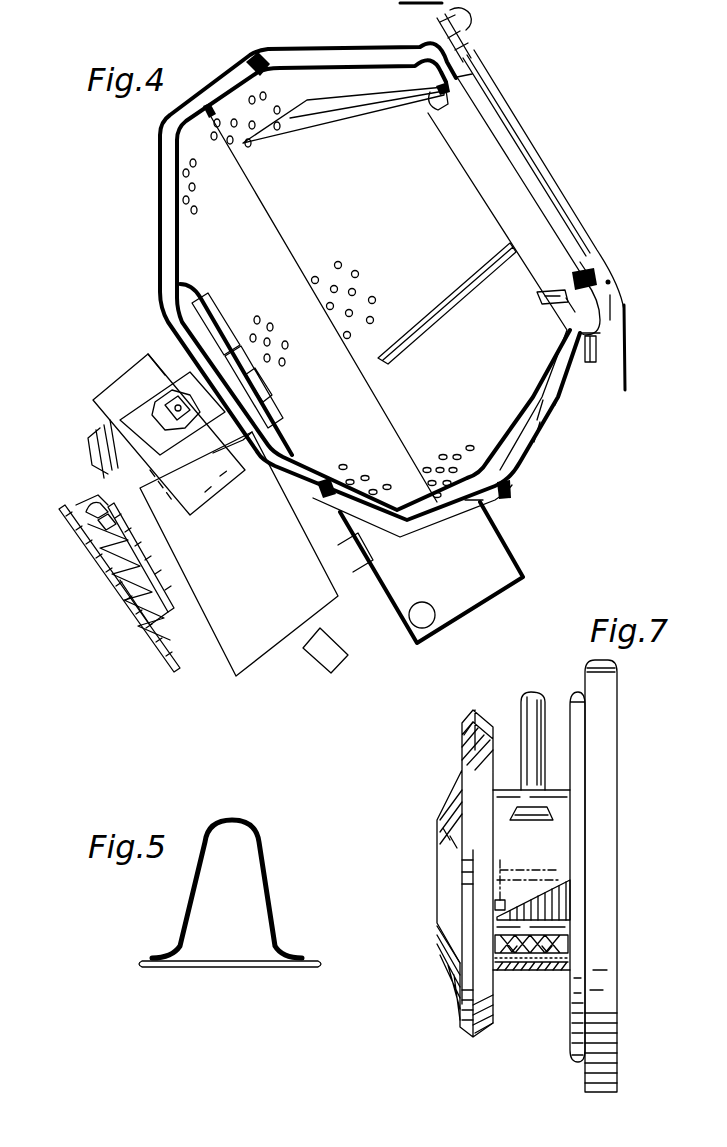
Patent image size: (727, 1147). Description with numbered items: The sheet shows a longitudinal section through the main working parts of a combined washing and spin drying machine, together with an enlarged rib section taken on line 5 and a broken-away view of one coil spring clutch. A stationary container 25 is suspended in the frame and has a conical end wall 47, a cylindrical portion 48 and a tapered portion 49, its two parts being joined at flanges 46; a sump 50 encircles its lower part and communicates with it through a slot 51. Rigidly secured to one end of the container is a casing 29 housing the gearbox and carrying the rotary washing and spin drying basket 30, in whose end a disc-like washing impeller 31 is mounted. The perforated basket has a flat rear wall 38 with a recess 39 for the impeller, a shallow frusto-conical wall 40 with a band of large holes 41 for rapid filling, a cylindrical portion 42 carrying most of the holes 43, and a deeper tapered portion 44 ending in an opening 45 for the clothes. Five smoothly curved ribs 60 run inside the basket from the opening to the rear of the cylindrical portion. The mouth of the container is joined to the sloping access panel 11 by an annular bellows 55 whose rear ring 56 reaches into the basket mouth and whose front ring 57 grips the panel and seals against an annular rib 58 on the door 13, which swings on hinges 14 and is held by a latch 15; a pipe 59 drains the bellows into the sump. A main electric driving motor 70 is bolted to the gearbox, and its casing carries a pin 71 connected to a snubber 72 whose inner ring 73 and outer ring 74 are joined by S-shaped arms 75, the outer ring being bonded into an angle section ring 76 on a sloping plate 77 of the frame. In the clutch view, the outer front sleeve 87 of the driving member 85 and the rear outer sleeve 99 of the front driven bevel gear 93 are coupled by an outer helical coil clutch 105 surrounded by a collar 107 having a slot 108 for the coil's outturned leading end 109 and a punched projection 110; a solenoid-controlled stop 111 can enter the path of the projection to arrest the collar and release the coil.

In FIG. 4, the section line 5— 5 is at (548, 468).
In FIG. 4, the sloping access panel 11 is at (620, 300).
In FIG. 4, the door 13 is at (546, 175).
In FIG. 4, the hinges 14 is at (618, 287).
In FIG. 4, the latch 15 is at (470, 20).
In FIG. 4, the stationary container 25 is at (558, 393).
In FIG. 4, the casing 29 is at (118, 390).
In FIG. 4, the rotary washing and spin drying basket 30 is at (192, 131).
In FIG. 4, the washing impeller 31 is at (265, 416).
In FIG. 4, the rear wall 38 is at (188, 296).
In FIG. 4, the recess 39 is at (202, 309).
In FIG. 4, the frusto-conical wall 40 is at (160, 183).
In FIG. 4, the holes 41 is at (365, 470).
In FIG. 4, the cylindrical portion 42 is at (512, 487).
In FIG. 4, the holes 43 is at (432, 462).
In FIG. 4, the tapered portion 44 is at (538, 414).
In FIG. 4, the opening 45 is at (432, 110).
In FIG. 4, the flanges 46 is at (258, 60).
In FIG. 4, the conical end wall 47 is at (316, 501).
In FIG. 4, the cylindrical portion 48 is at (472, 510).
In FIG. 4, the tapered portion 49 is at (539, 430).
In FIG. 4, the sump 50 is at (500, 562).
In FIG. 4, the slot 51 is at (428, 535).
In FIG. 4, the annular bellows 55 is at (603, 328).
In FIG. 4, the rear ring 56 is at (540, 296).
In FIG. 4, the front ring 57 is at (574, 278).
In FIG. 4, the annular rib 58 is at (590, 253).
In FIG. 4, the pipe 59 is at (596, 348).
In FIG. 4, the ribs 60 is at (333, 112).
In FIG. 5, the ribs 60 is at (273, 883).
In FIG. 4, the main electric driving motor 70 is at (234, 575).
In FIG. 4, the pin 71 is at (118, 582).
In FIG. 4, the snubber 72 is at (80, 505).
In FIG. 4, the inner ring 73 is at (128, 548).
In FIG. 4, the outer ring 74 is at (102, 520).
In FIG. 4, the S-shaped arms 75 is at (90, 540).
In FIG. 4, the angle section ring 76 is at (102, 508).
In FIG. 4, the sloping plate 77 is at (63, 520).
In FIG. 7, the driving member 85 is at (584, 1077).
In FIG. 7, the outer front sleeve 87 is at (545, 955).
In FIG. 7, the front driven bevel gear 93 is at (488, 1032).
In FIG. 7, the rear outer sleeve 99 is at (513, 955).
In FIG. 7, the outer helical coil clutch 105 is at (570, 953).
In FIG. 7, the collar 107 is at (553, 840).
In FIG. 7, the slot 108 is at (505, 900).
In FIG. 7, the outturned leading end 109 is at (495, 905).
In FIG. 7, the projection 110 is at (545, 807).
In FIG. 7, the stop 111 is at (530, 710).